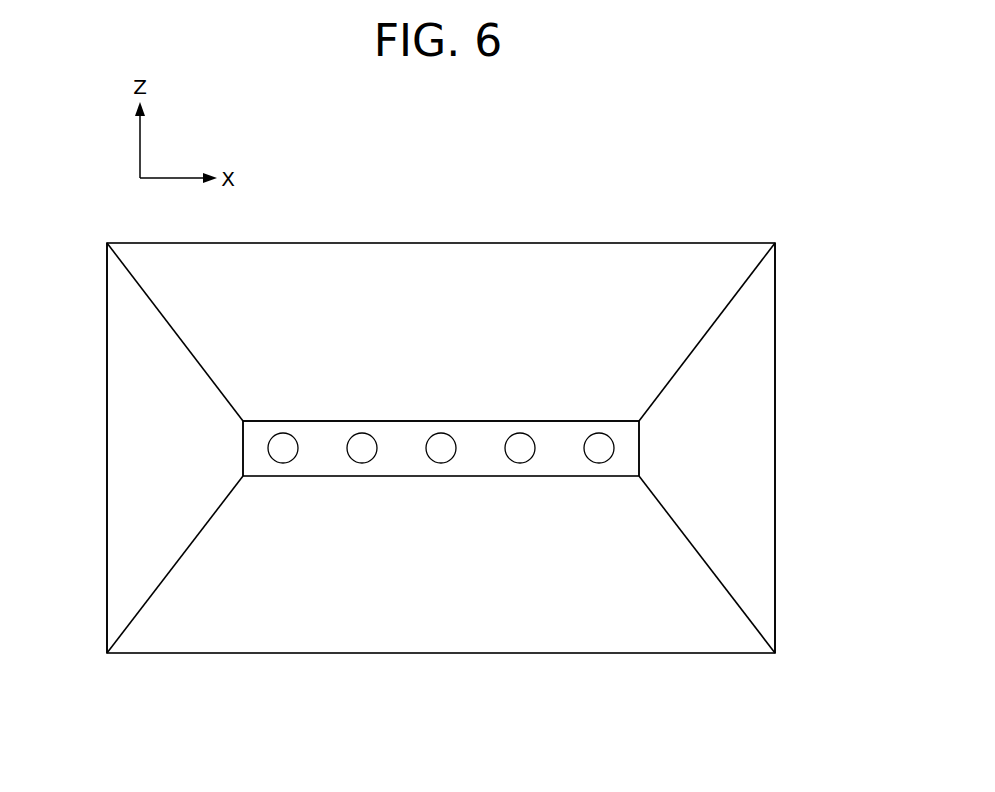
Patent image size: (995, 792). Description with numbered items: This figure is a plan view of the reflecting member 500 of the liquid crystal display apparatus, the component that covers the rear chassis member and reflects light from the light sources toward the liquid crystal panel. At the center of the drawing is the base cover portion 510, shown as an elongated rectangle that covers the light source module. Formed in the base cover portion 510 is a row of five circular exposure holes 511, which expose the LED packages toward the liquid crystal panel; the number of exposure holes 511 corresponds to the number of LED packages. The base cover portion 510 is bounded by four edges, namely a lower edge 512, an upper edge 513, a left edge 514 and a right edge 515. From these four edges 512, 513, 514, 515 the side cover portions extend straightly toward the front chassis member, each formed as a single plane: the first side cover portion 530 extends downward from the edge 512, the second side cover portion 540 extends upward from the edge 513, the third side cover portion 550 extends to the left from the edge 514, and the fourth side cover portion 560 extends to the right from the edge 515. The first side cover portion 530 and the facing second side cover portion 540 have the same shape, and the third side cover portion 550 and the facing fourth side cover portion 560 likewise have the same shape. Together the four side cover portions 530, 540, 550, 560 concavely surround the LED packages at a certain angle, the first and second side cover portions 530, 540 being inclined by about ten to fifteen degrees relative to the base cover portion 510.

The reflecting member 500 is at (672, 206).
The base cover portion 510 is at (595, 470).
The exposure holes 511 is at (352, 450).
The first edge of base cover portion 512 is at (323, 476).
The second edge of base cover portion 513 is at (527, 421).
The third edge of base cover portion 514 is at (241, 437).
The fourth edge of base cover portion 515 is at (640, 452).
The first side cover portion 530 is at (416, 642).
The second side cover portion 540 is at (190, 258).
The third side cover portion 550 is at (113, 418).
The fourth side cover portion 560 is at (766, 483).